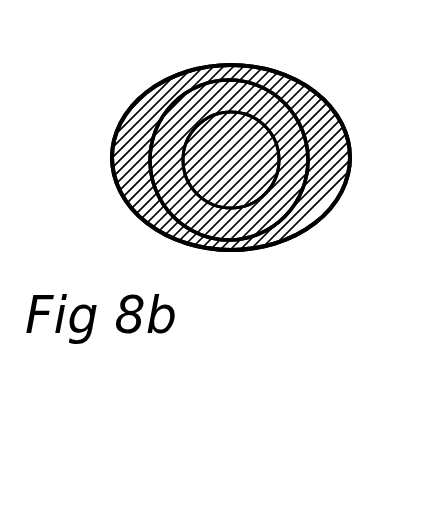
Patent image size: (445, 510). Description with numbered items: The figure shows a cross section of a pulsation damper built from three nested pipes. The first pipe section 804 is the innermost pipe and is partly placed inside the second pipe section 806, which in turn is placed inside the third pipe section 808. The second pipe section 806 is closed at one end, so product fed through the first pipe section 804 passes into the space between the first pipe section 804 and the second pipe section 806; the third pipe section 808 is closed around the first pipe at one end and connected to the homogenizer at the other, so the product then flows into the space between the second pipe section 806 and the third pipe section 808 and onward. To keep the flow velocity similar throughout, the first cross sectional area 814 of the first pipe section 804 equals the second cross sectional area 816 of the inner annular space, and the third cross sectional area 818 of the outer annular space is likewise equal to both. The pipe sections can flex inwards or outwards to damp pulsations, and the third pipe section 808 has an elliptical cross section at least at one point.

The first pipe section 804 is at (192, 115).
The second pipe section 806 is at (157, 120).
The third pipe section 808 is at (115, 168).
The first cross sectional area 814 is at (270, 134).
The second cross sectional area 816 is at (292, 162).
The third cross sectional area 818 is at (313, 207).